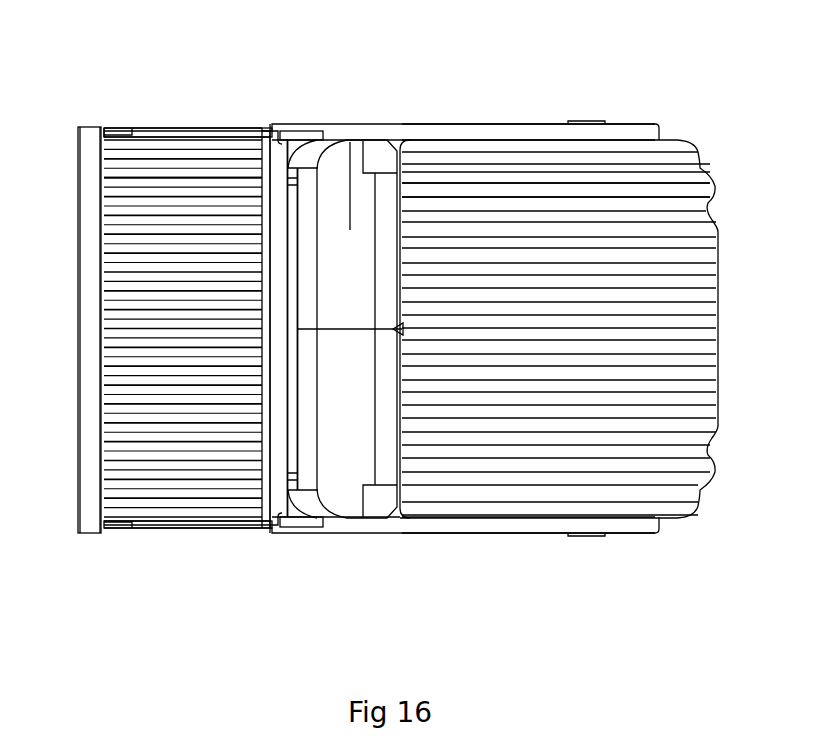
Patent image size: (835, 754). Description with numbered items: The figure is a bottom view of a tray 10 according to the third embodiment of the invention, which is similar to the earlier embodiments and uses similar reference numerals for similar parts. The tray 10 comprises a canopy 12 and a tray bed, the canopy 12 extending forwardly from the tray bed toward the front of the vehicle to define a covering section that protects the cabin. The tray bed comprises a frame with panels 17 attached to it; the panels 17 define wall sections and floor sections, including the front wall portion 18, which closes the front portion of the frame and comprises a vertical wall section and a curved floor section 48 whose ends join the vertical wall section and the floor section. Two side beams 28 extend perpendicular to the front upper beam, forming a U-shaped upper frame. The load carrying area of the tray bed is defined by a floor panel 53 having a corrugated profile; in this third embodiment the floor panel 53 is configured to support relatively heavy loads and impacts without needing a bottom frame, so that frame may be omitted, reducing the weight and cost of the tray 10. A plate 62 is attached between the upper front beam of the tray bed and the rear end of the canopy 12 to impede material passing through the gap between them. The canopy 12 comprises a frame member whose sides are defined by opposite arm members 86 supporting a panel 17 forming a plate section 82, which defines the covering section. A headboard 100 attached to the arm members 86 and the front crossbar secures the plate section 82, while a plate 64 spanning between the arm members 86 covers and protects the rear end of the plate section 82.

The tray 10 is at (188, 97).
The canopy 12 is at (200, 472).
The panels 17 is at (128, 175).
The front wall portion 18 is at (310, 215).
The side beams 28 is at (470, 137).
The curved floor section 48 is at (345, 432).
The floor panel 53 is at (668, 232).
The plate 62 is at (309, 528).
The plate 64 is at (270, 180).
The plate section 82 is at (155, 300).
The arm members 86 is at (232, 137).
The headboard 100 is at (90, 218).